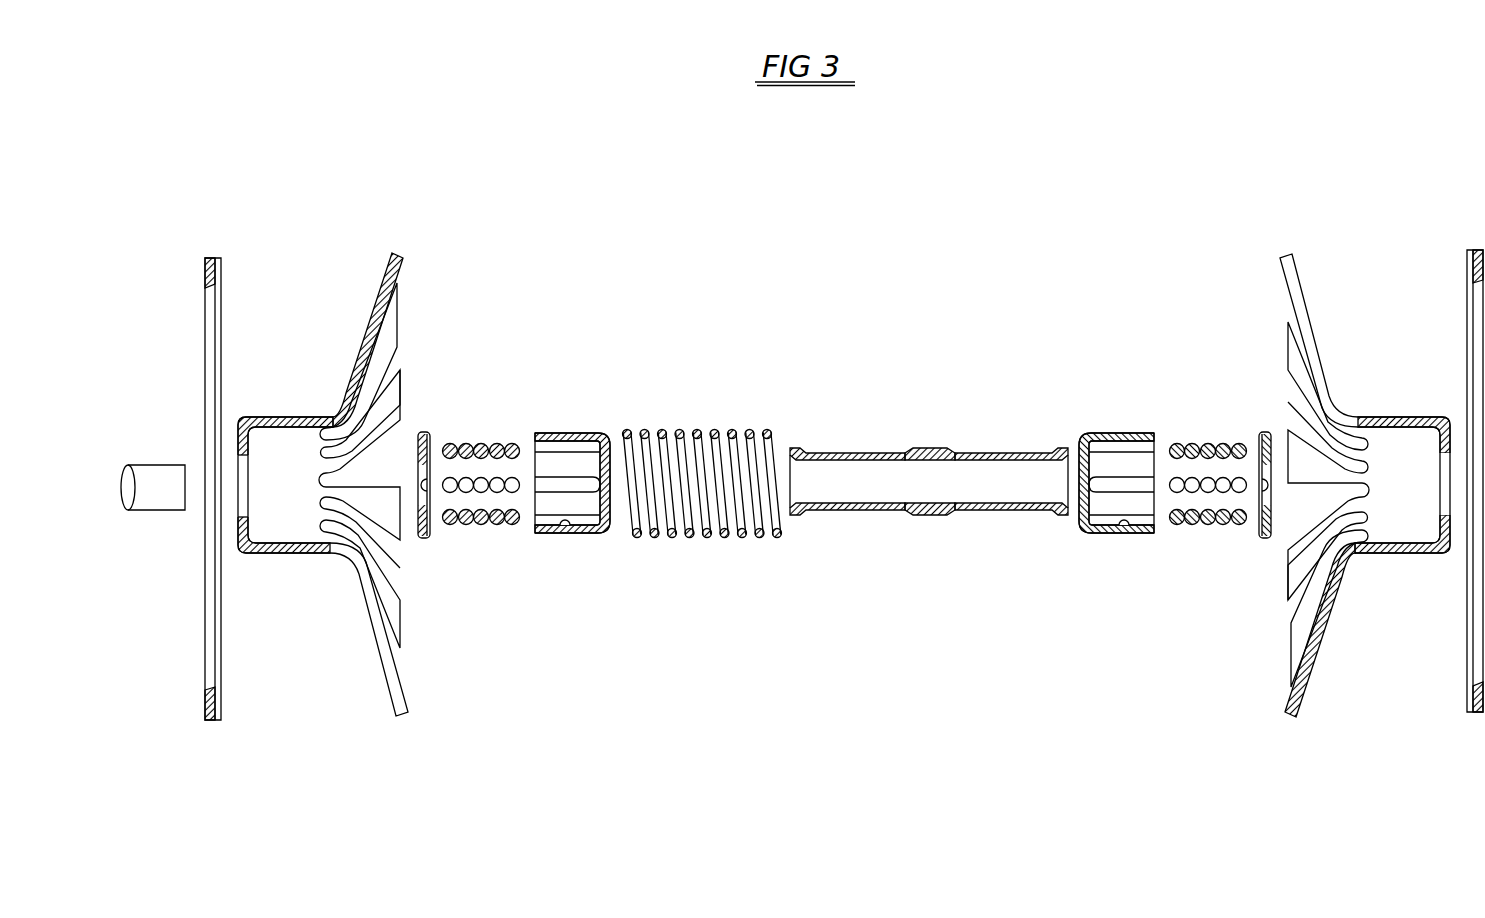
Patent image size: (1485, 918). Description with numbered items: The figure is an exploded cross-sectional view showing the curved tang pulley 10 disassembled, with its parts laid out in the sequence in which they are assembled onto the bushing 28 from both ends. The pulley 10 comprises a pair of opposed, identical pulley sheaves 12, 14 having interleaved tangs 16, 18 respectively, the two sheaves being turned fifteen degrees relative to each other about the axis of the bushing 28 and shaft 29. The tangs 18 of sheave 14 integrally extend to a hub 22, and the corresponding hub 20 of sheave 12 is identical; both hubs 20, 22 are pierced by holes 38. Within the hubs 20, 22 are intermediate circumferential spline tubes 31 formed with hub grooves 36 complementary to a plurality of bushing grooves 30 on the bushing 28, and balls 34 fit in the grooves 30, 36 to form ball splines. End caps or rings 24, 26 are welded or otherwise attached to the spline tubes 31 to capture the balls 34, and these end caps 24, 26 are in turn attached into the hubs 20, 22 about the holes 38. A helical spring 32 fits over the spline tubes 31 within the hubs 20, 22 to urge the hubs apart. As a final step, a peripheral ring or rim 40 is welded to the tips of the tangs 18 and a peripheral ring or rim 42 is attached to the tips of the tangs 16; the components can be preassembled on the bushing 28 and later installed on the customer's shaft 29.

The pulley 10 is at (1480, 780).
The pulley sheave 12 is at (402, 235).
The pulley sheave 14 is at (1447, 225).
The tangs 16 is at (400, 313).
The tangs 18 is at (1303, 298).
The hub 20 is at (266, 417).
The hub 22 is at (1397, 417).
The end cap 24 is at (426, 432).
The end cap 26 is at (1268, 428).
The bushing 28 is at (920, 451).
The shaft 29 is at (167, 470).
The bushing grooves 30 is at (820, 450).
The spline tube 31 is at (556, 434).
The helical spring 32 is at (770, 430).
The balls 34 is at (466, 444).
The hub grooves 36 is at (567, 528).
The holes 38 is at (243, 497).
The peripheral ring 40 is at (222, 320).
The peripheral ring 42 is at (1466, 290).